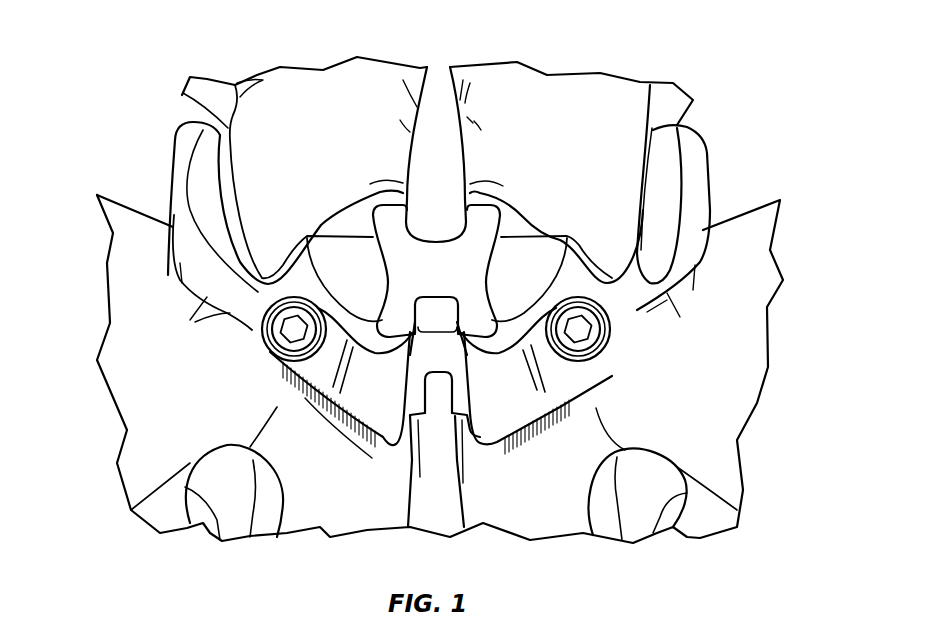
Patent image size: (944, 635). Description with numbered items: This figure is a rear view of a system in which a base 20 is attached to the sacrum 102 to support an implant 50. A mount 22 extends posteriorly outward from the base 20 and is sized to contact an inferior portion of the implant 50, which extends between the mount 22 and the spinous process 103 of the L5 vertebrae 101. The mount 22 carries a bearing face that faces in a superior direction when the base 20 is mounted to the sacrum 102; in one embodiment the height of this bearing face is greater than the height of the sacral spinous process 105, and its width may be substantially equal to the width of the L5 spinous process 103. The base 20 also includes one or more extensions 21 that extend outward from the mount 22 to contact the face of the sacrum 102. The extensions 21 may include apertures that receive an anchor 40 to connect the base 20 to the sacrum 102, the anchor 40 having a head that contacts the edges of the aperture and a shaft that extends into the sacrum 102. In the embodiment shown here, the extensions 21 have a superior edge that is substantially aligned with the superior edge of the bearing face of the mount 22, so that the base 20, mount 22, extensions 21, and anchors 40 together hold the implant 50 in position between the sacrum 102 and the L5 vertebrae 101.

The base 20 is at (330, 370).
The extensions 21 is at (563, 363).
The mount 22 is at (447, 313).
The anchor 40 is at (287, 320).
The implant 50 is at (373, 247).
The L5 vertebrae 101 is at (603, 123).
The sacrum 102 is at (690, 370).
The spinous process 103 is at (420, 190).
The sacral spinous process 105 is at (433, 390).